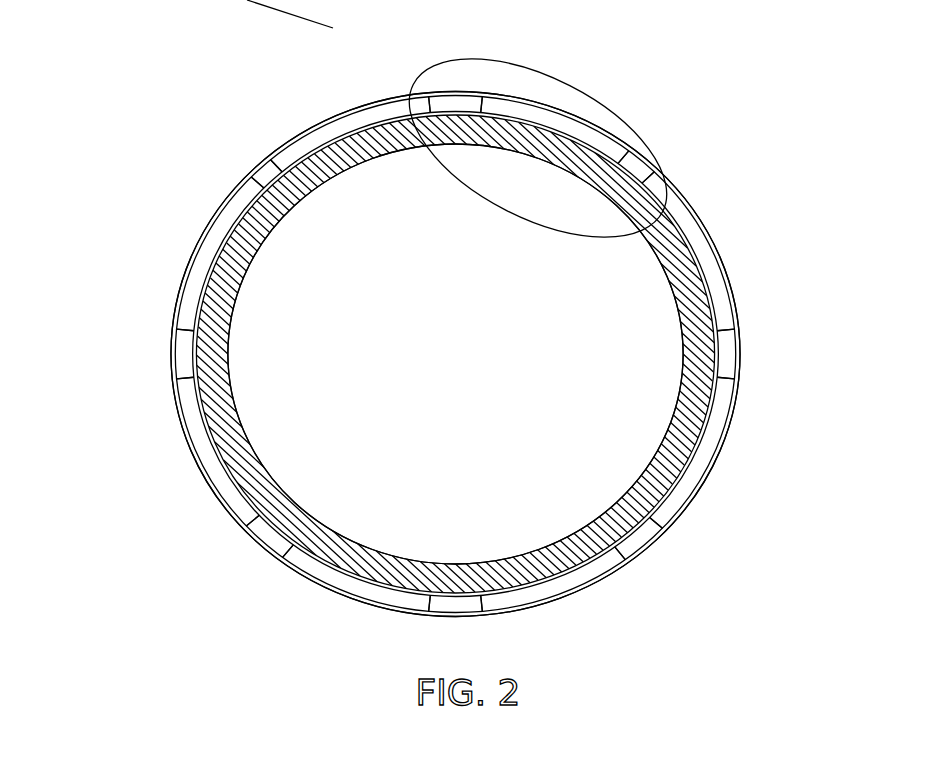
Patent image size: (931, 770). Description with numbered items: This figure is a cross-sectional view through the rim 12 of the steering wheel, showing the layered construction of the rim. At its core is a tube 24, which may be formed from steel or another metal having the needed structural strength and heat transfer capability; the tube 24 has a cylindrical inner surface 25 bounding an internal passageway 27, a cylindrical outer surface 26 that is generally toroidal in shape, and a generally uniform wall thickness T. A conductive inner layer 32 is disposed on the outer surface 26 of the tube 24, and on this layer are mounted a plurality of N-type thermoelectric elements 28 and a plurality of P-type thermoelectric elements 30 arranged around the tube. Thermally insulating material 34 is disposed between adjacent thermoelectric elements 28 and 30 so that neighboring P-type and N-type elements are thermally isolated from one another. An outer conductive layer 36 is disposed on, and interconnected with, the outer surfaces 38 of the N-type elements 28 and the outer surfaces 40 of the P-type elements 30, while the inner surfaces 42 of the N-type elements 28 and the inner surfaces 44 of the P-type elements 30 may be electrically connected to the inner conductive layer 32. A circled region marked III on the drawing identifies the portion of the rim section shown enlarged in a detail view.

The rim 12 is at (306, 127).
The tube 24 is at (295, 212).
The cylindrical inner surface 25 is at (228, 385).
The cylindrical outer surface 26 is at (202, 420).
The internal passageway 27 is at (443, 316).
The N-type thermoelectric elements 28 is at (459, 105).
The P-type thermoelectric elements 30 is at (655, 160).
The conductive inner layer 32 is at (703, 232).
The thermally insulating material 34 is at (345, 118).
The outer conductive layer 36 is at (736, 416).
The outer surfaces of N-type TE elements 38 is at (476, 96).
The outer surfaces of P-type TE elements 40 is at (662, 176).
The inner surfaces of N-type TE elements 42 is at (717, 346).
The inner surfaces of P-type TE elements 44 is at (277, 528).
The wall thickness T is at (255, 455).
The detail view indicator III is at (715, 96).